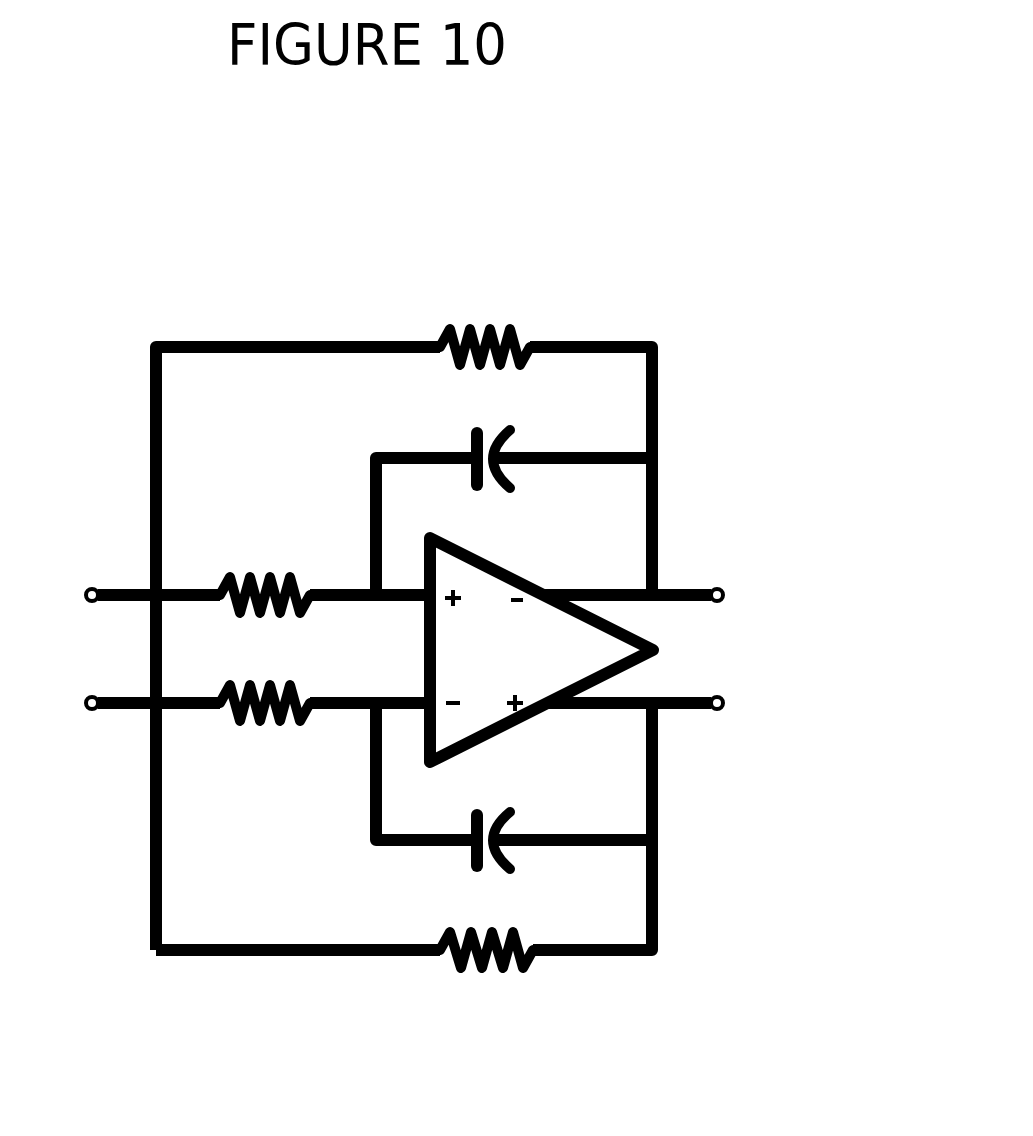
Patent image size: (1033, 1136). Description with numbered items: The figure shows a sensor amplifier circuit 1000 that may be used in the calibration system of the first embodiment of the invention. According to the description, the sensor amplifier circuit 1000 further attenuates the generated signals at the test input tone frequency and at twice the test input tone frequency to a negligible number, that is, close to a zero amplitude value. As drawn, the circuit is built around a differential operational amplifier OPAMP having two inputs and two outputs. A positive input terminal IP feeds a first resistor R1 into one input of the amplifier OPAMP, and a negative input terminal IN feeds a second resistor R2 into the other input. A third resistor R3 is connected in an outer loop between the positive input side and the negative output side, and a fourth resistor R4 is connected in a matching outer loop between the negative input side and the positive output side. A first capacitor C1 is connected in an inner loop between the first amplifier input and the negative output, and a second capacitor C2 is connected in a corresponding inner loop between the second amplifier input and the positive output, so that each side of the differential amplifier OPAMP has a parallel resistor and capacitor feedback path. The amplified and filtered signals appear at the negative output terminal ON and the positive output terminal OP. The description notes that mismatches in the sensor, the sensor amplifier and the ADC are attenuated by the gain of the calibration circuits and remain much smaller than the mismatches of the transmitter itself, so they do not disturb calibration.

The sensor amplifier circuit 1000 is at (752, 242).
The input resistor (positive input) R1 is at (325, 565).
The input resistor (negative input) R2 is at (325, 735).
The feedback resistor R3 is at (485, 319).
The feedback resistor R4 is at (486, 980).
The feedback capacitor C1 is at (486, 435).
The feedback capacitor C2 is at (487, 867).
The operational amplifier OPAMP is at (541, 650).
The positive input terminal IP is at (120, 594).
The negative input terminal IN is at (120, 703).
The negative output terminal ON is at (675, 599).
The positive output terminal OP is at (677, 709).